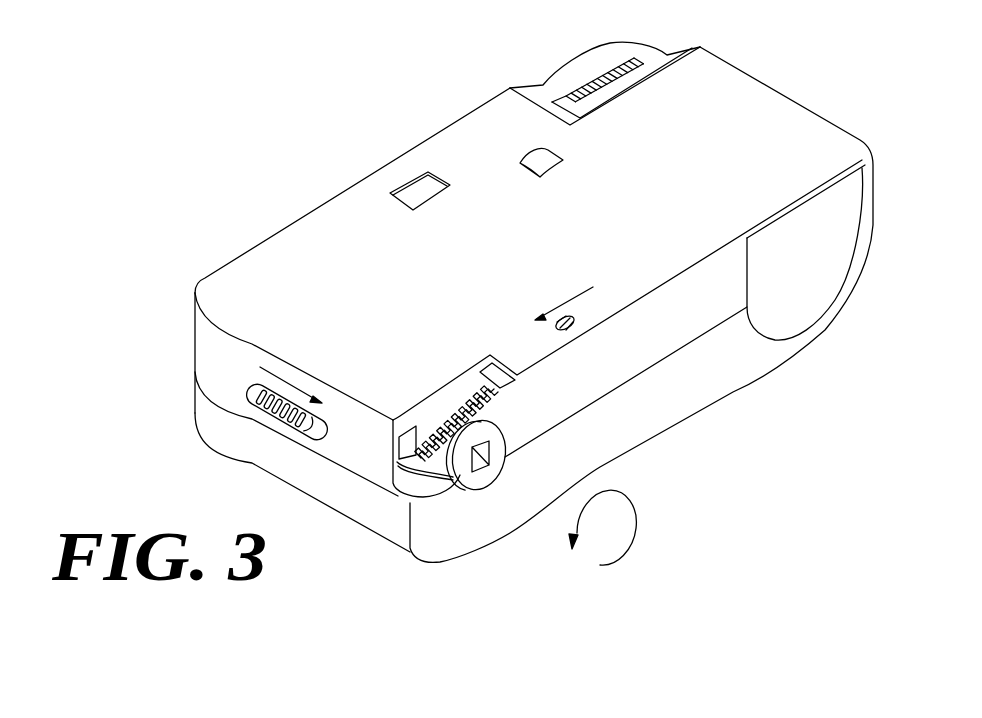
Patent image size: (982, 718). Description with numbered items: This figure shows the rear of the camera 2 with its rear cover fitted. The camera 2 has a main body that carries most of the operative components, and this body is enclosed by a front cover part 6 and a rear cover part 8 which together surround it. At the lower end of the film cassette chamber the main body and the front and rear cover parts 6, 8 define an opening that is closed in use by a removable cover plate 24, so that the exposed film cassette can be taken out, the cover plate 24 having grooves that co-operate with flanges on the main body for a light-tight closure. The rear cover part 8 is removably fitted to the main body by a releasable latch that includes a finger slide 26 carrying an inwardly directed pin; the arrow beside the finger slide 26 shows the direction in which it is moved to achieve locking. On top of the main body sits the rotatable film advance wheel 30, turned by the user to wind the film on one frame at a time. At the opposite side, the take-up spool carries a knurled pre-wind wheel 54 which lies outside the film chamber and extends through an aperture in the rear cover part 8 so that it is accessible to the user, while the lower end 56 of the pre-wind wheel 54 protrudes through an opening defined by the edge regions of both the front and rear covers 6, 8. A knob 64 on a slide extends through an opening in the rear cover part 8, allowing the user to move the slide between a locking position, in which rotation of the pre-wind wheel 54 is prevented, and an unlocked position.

The camera 2 is at (140, 372).
The front cover part 6 is at (717, 375).
The rear cover part 8 is at (760, 107).
The removable cover plate 24 is at (815, 273).
The finger slide 26 is at (293, 426).
The film advance wheel 30 is at (623, 62).
The pre-wind wheel 54 is at (452, 405).
The lower end of the pre-wind wheel 56 is at (468, 478).
The knob 64 is at (576, 318).